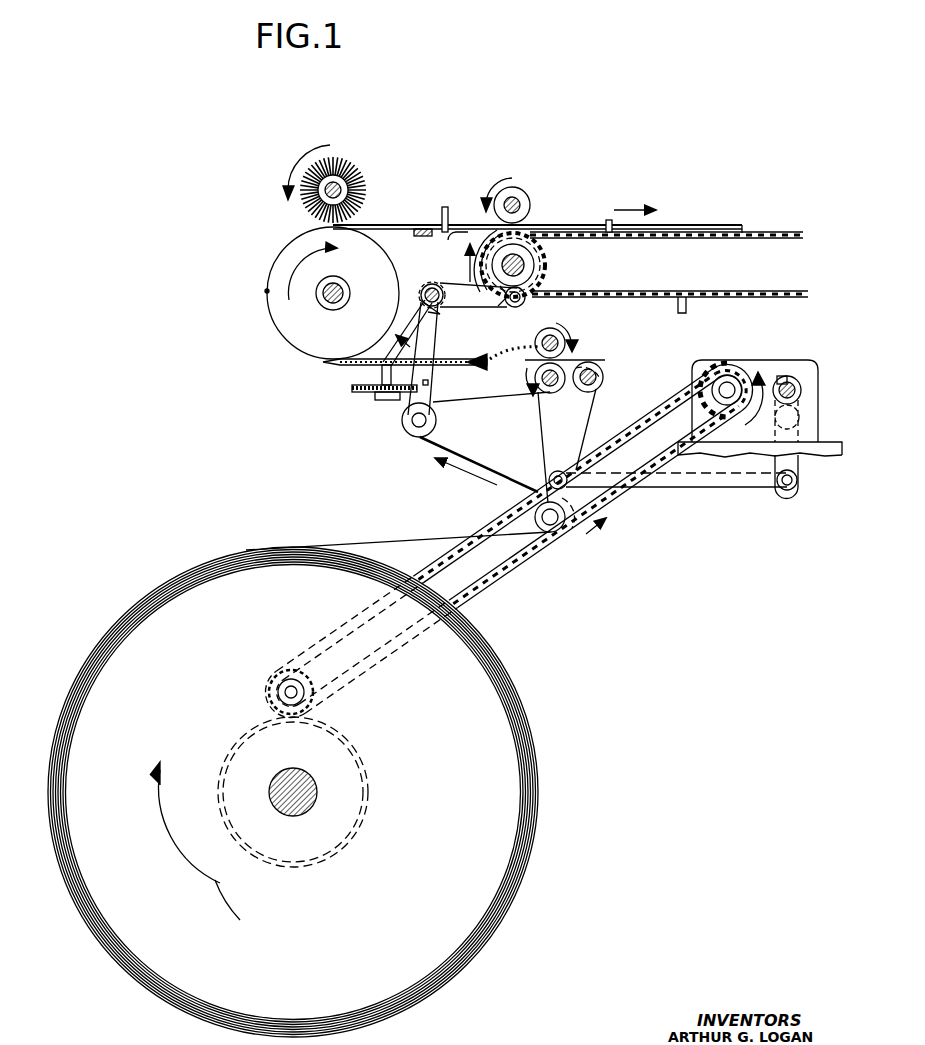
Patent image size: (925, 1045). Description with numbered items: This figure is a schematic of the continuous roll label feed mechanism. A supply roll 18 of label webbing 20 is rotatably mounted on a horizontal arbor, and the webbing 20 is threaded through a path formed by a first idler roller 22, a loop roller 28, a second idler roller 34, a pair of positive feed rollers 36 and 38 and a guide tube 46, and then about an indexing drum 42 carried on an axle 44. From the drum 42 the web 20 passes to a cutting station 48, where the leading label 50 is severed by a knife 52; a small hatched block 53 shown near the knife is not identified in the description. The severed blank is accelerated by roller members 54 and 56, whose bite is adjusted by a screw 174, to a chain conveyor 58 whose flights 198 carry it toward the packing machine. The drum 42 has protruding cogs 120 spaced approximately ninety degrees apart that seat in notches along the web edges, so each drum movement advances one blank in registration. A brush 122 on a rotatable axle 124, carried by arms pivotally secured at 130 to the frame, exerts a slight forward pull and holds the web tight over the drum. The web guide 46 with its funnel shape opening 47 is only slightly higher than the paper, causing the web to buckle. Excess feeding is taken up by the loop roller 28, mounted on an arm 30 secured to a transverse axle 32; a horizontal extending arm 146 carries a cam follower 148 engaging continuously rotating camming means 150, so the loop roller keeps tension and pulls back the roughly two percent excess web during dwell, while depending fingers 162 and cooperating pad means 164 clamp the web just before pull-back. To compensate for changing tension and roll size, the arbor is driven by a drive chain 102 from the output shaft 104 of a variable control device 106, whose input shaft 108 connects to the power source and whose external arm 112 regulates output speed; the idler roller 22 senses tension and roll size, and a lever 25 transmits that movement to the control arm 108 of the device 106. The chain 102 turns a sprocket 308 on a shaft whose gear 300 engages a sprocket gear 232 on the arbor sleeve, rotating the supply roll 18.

The supply roll 18 is at (520, 843).
The label webbing 20 is at (400, 542).
The first idler roller 22 is at (538, 520).
The lever 25 is at (674, 489).
The loop roller 28 is at (437, 429).
The arm 30 is at (433, 348).
The transverse axle 32 is at (430, 283).
The second idler roller 34 is at (603, 377).
The upper positive feed roller 36 is at (568, 334).
The positive feed roller 38 is at (550, 392).
The indexing drum 42 is at (313, 350).
The axle 44 is at (320, 301).
The guide tube 46 is at (469, 356).
The funnel shape opening 47 is at (497, 352).
The cutting station 48 is at (458, 210).
The leading label 50 is at (670, 222).
The knife 52 is at (440, 216).
The block 53 is at (414, 236).
The upper roller member 54 is at (529, 201).
The lower roller member 56 is at (508, 228).
The chain conveyor 58 is at (770, 232).
The drive chain 102 is at (500, 573).
The output shaft 104 is at (729, 387).
The variable control device 106 is at (794, 364).
The input shaft 108 is at (794, 395).
The external arm 112 is at (794, 465).
The cogs 120 is at (266, 290).
The brush 122 is at (357, 168).
The rotatable axle 124 is at (346, 190).
The pivot 130 is at (570, 354).
The horizontal extending arm 146 is at (462, 283).
The cam follower 148 is at (524, 305).
The camming means 150 is at (545, 273).
The clamp fingers 162 is at (417, 333).
The pad means 164 is at (387, 378).
The screw 174 is at (358, 391).
The flights 198 is at (606, 220).
The sprocket gear 232 is at (362, 825).
The gear 300 is at (269, 670).
The sprocket 308 is at (322, 676).